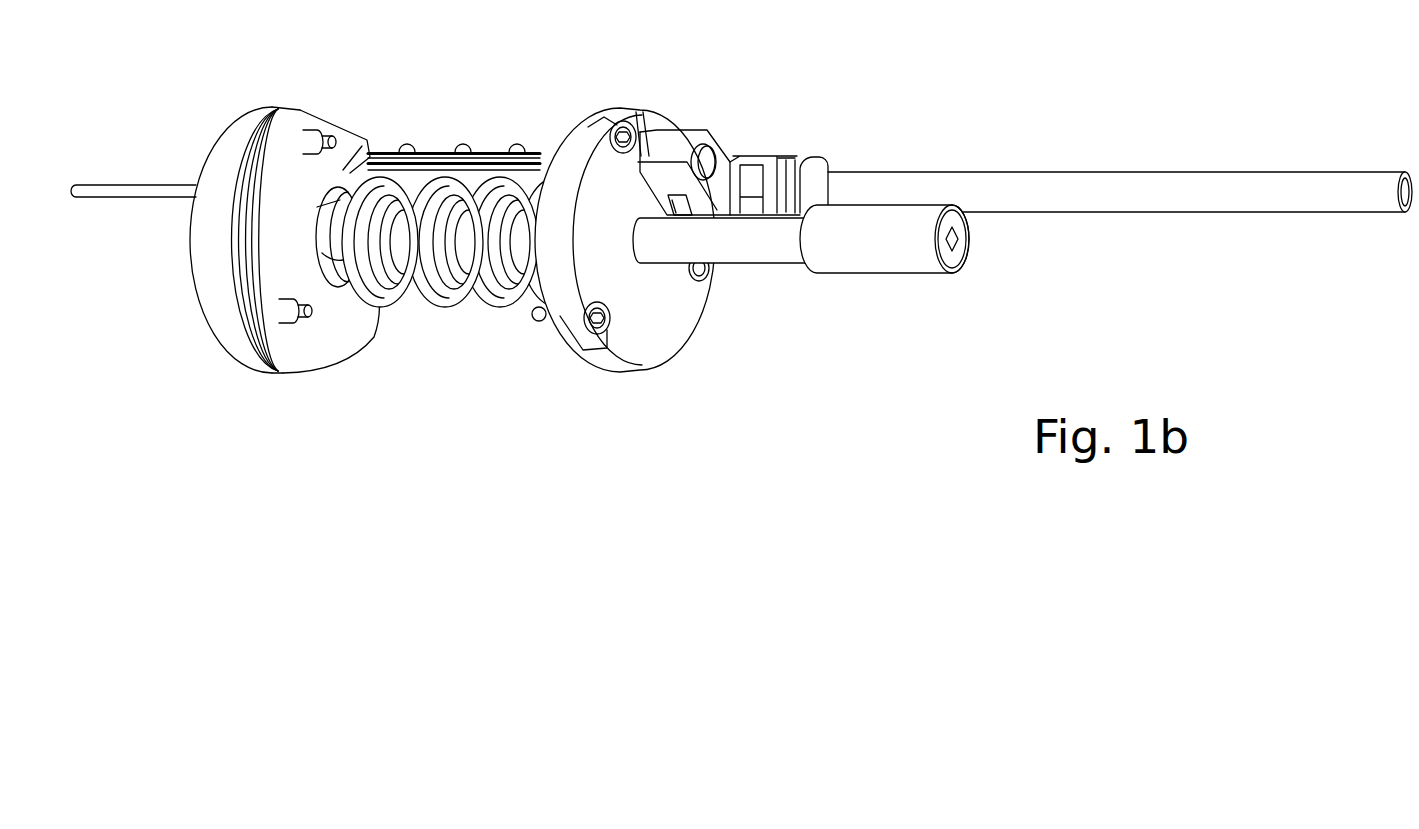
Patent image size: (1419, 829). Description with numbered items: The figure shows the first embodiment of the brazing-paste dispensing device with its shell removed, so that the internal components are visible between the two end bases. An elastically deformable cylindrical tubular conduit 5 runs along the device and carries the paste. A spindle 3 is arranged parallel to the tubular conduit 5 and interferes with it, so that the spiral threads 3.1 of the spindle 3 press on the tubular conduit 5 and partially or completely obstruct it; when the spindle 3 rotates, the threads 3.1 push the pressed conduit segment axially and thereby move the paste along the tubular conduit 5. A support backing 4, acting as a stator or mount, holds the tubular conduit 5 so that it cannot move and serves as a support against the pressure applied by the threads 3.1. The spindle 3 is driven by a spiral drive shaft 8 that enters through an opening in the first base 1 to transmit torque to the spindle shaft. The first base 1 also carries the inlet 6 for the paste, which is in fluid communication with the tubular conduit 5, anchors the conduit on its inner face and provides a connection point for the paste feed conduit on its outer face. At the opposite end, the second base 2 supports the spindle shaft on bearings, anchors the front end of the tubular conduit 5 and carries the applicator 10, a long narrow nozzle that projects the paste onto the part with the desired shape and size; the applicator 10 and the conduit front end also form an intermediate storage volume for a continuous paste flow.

The first base 1 is at (655, 323).
The second base 2 is at (233, 343).
The spindle 3 is at (393, 290).
The threads 3.1 is at (463, 300).
The support backing 4 is at (397, 153).
The tubular conduit 5 is at (430, 168).
The inlet 6 is at (720, 173).
The drive shaft 8 is at (870, 253).
The applicator 10 is at (148, 190).